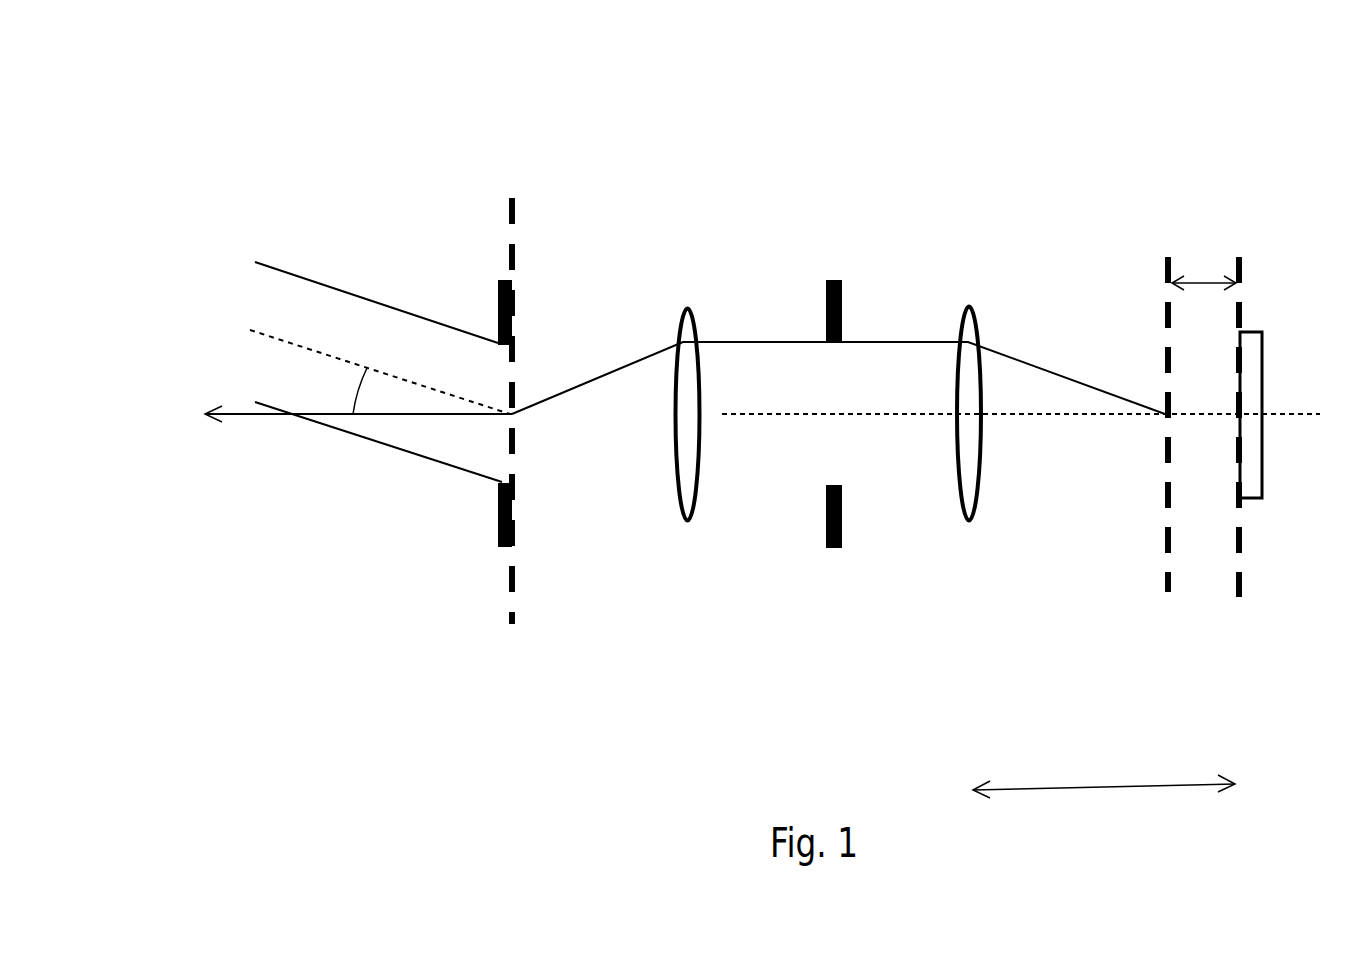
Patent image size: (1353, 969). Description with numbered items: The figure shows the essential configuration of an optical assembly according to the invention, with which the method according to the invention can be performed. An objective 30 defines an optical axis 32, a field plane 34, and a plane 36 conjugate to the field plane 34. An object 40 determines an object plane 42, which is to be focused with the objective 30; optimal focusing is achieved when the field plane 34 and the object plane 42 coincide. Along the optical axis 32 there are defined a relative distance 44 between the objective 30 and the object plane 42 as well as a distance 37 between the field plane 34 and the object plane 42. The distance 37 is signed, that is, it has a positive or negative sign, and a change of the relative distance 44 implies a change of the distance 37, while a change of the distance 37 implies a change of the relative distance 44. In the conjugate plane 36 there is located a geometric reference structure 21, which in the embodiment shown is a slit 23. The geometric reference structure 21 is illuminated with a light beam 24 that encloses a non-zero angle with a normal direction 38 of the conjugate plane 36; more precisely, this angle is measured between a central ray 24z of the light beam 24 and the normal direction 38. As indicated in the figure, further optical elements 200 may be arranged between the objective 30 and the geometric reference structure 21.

The light beam 24 is at (277, 288).
The central ray 24z is at (272, 336).
The normal direction 38 is at (243, 418).
The geometric reference structure 21 is at (449, 372).
The slit 23 is at (493, 307).
The conjugate plane 36 is at (514, 609).
The further optical elements 200 is at (687, 307).
The optical axis 32 is at (787, 417).
The objective 30 is at (997, 550).
The field plane 34 is at (1168, 537).
The object plane 42 is at (1237, 562).
The distance 37 is at (1203, 283).
The object 40 is at (1252, 357).
The relative distance 44 is at (1060, 786).